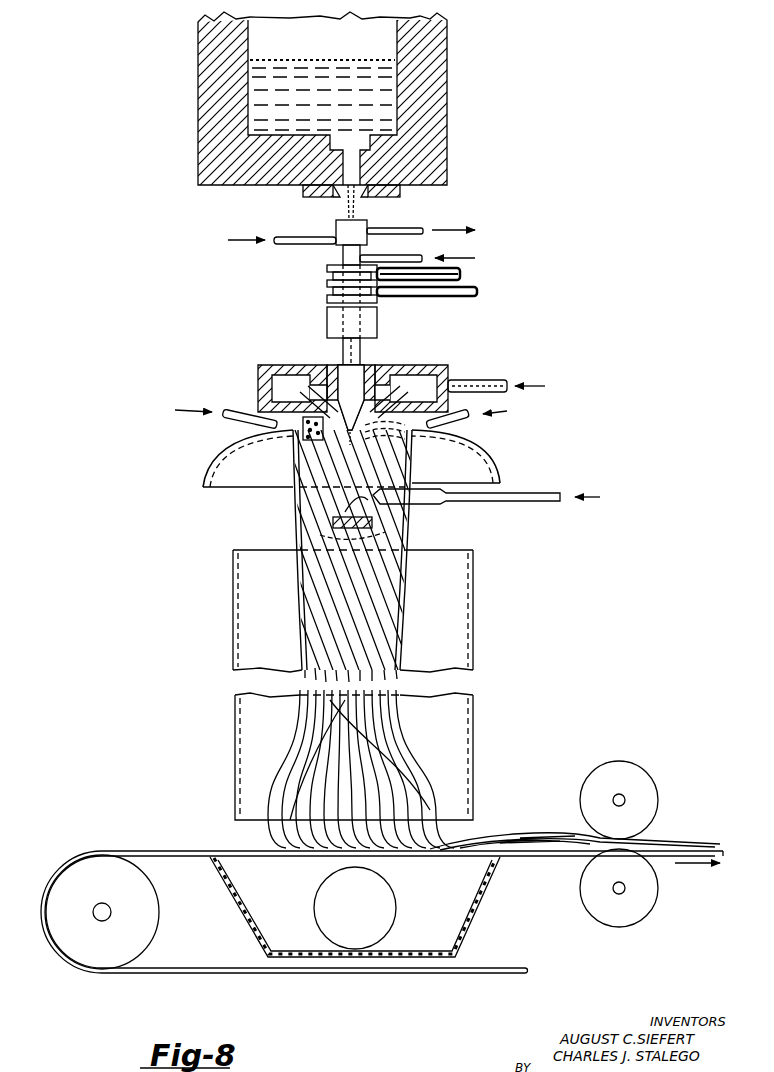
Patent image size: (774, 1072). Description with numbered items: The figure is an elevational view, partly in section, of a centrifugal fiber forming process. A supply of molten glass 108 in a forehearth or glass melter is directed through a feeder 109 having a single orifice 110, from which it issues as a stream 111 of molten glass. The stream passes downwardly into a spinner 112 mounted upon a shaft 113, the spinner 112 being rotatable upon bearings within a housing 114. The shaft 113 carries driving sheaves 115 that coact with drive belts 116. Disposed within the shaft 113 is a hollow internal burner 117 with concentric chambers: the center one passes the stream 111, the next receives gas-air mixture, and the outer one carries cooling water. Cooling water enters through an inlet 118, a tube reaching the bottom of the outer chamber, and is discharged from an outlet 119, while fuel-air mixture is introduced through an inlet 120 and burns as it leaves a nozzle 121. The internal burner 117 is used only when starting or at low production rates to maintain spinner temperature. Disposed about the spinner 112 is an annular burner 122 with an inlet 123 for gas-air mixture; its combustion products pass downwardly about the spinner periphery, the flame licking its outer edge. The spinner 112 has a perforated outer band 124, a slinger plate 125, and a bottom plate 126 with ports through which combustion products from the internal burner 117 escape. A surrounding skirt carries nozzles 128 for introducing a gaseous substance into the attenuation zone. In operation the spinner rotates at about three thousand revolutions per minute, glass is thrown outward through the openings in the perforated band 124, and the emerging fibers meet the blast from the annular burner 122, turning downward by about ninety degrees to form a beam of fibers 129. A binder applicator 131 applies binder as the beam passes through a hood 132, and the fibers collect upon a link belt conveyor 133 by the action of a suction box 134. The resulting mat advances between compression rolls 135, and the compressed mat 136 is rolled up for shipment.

The supply of molten glass 108 is at (265, 62).
The feeder 109 is at (318, 193).
The orifice 110 is at (345, 212).
The stream of molten glass 111 is at (357, 222).
The spinner 112 is at (365, 390).
The shaft 113 is at (345, 340).
The housing 114 is at (378, 318).
The driving sheaves 115 is at (328, 294).
The drive belts 116 is at (470, 280).
The internal burner 117 is at (343, 255).
The inlet 118 is at (278, 241).
The outlet 119 is at (418, 229).
The inlet 120 is at (420, 257).
The nozzle 121 is at (338, 372).
The annular burner 122 is at (445, 368).
The inlet 123 is at (500, 380).
The perforated outer band 124 is at (305, 438).
The slinger plate 125 is at (400, 430).
The bottom plate 126 is at (350, 488).
The nozzles 128 is at (243, 412).
The beam of fibers 129 is at (405, 510).
The binder applicator 131 is at (340, 530).
The hood 132 is at (475, 648).
The link belt conveyor 133 is at (165, 850).
The suction box 134 is at (455, 948).
The compression rolls 135 is at (648, 787).
The compressed mat 136 is at (700, 835).